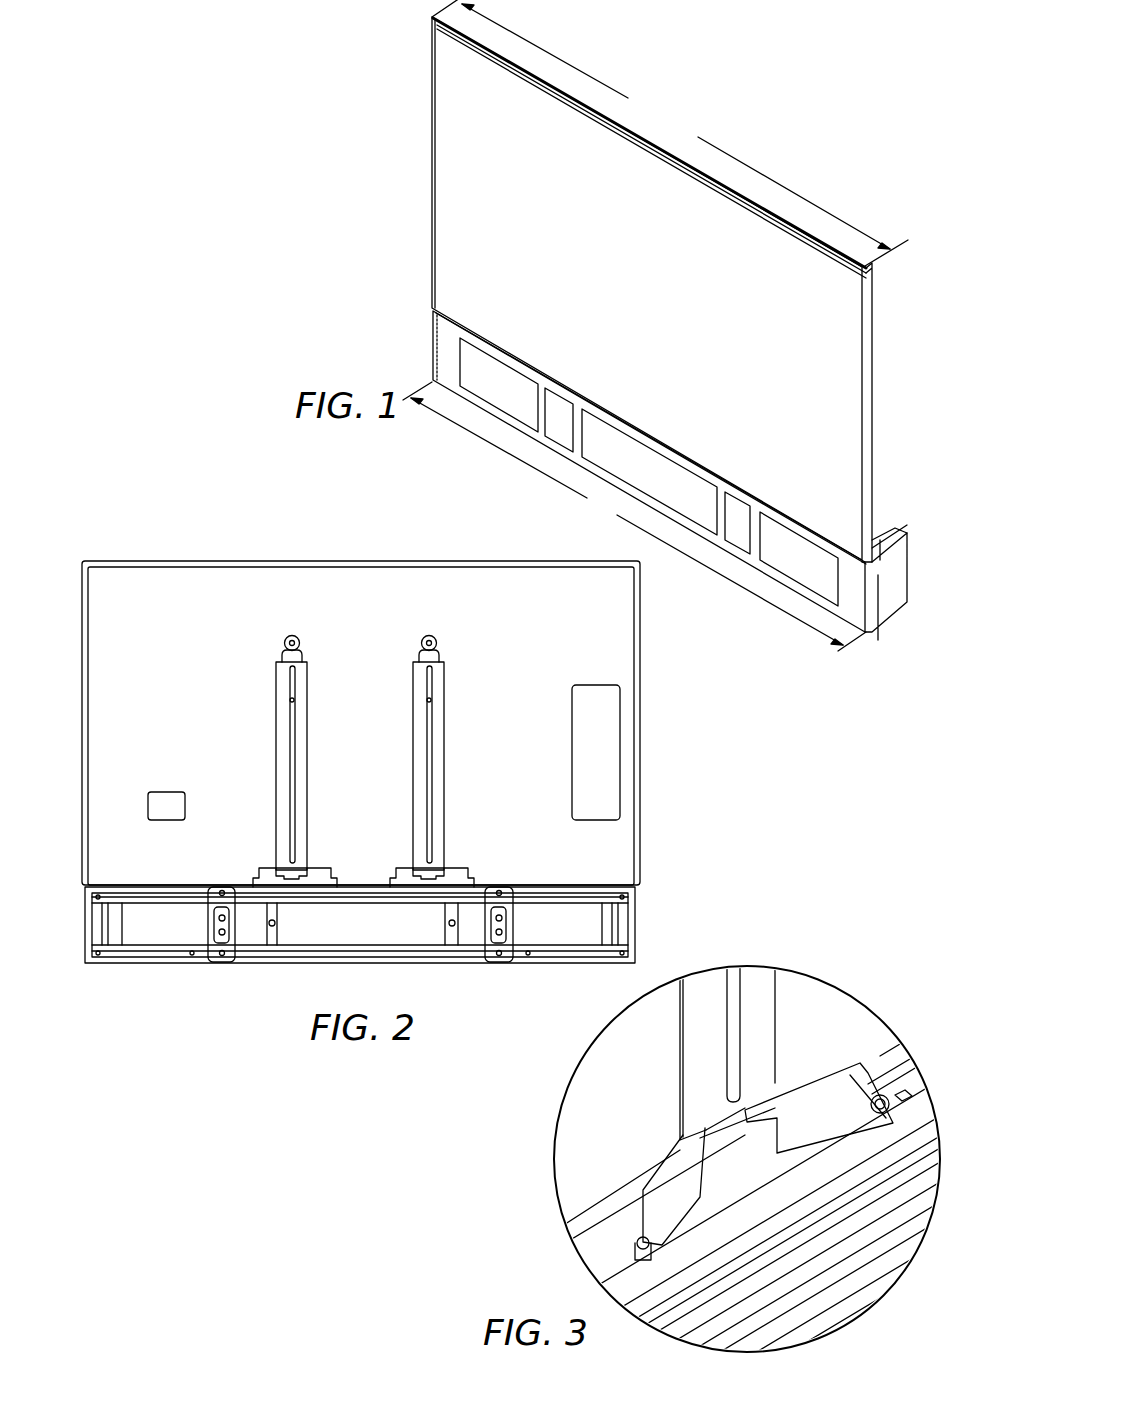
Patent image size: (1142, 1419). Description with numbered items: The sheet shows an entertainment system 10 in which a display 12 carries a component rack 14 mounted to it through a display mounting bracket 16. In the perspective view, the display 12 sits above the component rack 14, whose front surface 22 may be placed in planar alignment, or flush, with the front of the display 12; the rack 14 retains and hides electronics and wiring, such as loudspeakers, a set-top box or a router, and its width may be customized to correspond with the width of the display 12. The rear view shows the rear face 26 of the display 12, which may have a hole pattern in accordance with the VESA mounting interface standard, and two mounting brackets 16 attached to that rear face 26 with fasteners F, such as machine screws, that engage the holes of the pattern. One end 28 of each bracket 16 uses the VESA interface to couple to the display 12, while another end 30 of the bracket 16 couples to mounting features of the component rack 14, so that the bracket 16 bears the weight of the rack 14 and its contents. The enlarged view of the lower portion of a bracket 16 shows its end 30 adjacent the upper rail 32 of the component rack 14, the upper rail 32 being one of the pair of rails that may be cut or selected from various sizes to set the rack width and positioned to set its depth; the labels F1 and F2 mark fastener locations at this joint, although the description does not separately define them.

In FIG. 1, the entertainment system 10 is at (397, 56).
In FIG. 1, the display 12 is at (427, 247).
In FIG. 2, the display 12 is at (78, 771).
In FIG. 1, the component rack 14 is at (430, 357).
In FIG. 2, the component rack 14 is at (82, 923).
In FIG. 2, the display mounting bracket 16 is at (447, 830).
In FIG. 3, the display mounting bracket 16 is at (780, 1012).
In FIG. 1, the front surface 22 is at (538, 418).
In FIG. 2, the rear face 26 is at (188, 697).
In FIG. 3, the rear face 26 is at (605, 1120).
In FIG. 2, the one end 28 is at (447, 692).
In FIG. 2, the another end 30 is at (480, 872).
In FIG. 3, the another end 30 is at (838, 1078).
In FIG. 3, the upper rail 32 is at (920, 1133).
In FIG. 2, the fasteners F is at (427, 685).
In FIG. 3, the first fastener F1 is at (882, 1100).
In FIG. 3, the second fastener F2 is at (910, 1088).